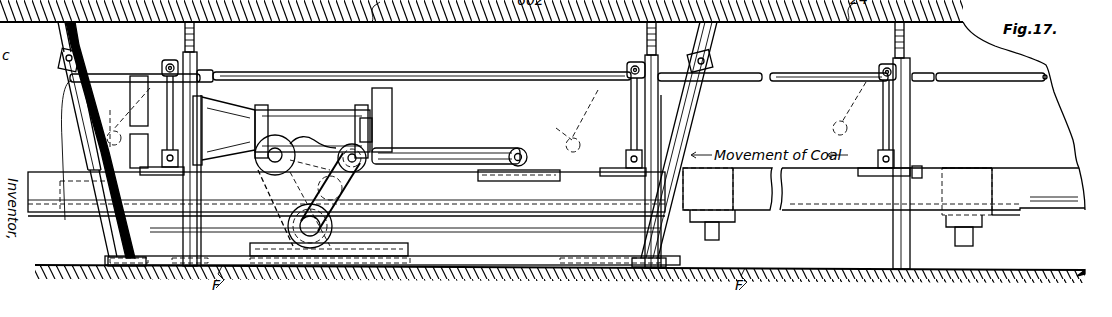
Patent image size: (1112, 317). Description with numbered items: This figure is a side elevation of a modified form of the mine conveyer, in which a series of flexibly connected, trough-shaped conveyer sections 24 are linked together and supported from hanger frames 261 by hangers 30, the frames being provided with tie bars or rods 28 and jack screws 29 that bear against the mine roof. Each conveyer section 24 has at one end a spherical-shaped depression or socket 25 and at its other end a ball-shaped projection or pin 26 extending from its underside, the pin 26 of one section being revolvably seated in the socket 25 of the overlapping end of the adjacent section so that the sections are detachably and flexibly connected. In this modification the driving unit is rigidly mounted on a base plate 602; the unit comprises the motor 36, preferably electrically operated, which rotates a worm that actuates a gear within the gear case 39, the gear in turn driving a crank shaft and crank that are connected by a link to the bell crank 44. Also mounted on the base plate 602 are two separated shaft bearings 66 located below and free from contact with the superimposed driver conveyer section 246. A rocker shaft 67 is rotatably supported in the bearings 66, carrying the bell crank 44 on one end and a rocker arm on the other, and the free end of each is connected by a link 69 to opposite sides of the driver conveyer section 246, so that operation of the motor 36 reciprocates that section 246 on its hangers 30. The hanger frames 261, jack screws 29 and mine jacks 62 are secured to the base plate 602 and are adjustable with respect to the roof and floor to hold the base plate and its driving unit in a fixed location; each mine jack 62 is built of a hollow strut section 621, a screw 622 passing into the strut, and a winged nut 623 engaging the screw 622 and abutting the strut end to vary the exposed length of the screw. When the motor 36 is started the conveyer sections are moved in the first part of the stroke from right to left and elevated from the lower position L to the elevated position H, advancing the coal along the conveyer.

The conveyer section 24 is at (848, 210).
The spherical-shaped depression or socket 25 is at (723, 224).
The ball-shaped projection or pin 26 is at (713, 239).
The tie bar or rod 28 is at (454, 75).
The jack screw 29 is at (194, 44).
The hanger 30 is at (169, 129).
The motor 36 is at (70, 144).
The gear case 39 is at (308, 112).
The bell crank 44 is at (262, 166).
The mine jack 62 is at (703, 128).
The shaft bearing 66 is at (370, 248).
The rocker shaft 67 is at (352, 199).
The link 69 is at (446, 149).
The driver conveyer section 246 is at (75, 215).
The hanger frame 261 is at (198, 92).
The base plate 602 is at (544, 261).
The hollow strut section 621 is at (80, 109).
The screw 622 is at (60, 46).
The winged nut 623 is at (79, 58).
The elevated position H is at (482, 117).
The lower position L is at (628, 180).